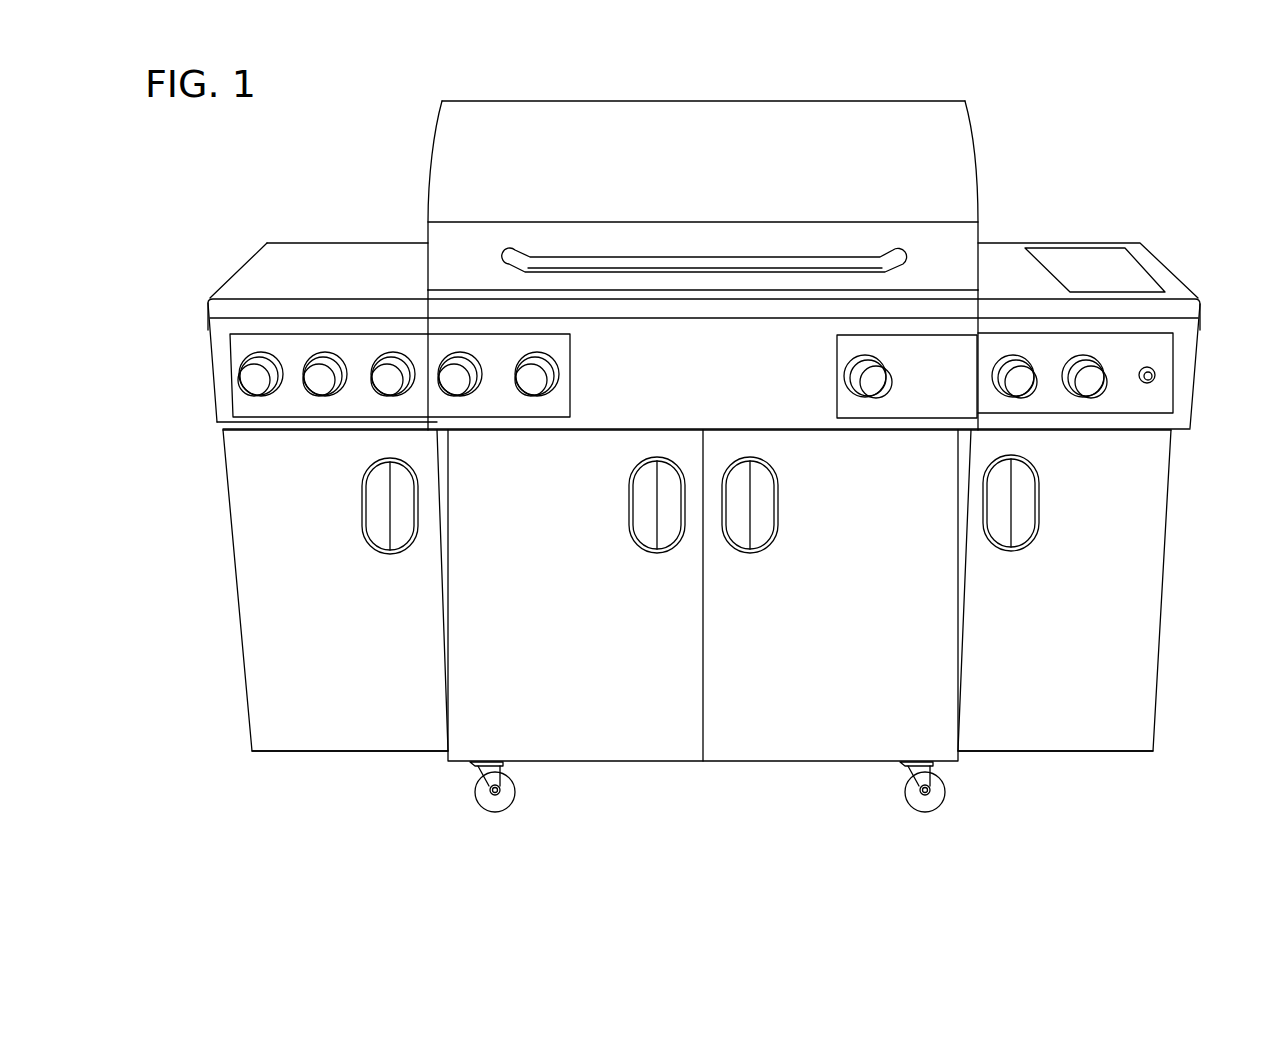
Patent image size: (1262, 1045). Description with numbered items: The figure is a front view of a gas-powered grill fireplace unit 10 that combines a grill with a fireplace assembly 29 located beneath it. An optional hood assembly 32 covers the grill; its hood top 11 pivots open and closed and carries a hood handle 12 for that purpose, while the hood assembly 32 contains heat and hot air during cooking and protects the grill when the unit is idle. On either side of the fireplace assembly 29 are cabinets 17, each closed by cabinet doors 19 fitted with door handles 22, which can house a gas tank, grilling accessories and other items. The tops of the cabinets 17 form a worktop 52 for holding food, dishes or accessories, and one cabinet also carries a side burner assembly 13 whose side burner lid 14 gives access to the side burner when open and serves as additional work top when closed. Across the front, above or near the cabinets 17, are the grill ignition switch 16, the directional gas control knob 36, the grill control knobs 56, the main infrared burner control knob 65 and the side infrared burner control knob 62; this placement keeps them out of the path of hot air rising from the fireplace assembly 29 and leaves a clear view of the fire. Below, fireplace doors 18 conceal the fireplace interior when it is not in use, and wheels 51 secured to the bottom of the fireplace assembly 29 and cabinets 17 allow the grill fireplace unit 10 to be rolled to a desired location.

The grill fireplace unit 10 is at (376, 130).
The hood top 11 is at (955, 135).
The hood handle 12 is at (865, 262).
The side burner assembly 13 is at (1100, 255).
The side burner lid 14 is at (1128, 277).
The grill ignition switch 16 is at (1156, 376).
The cabinets 17 is at (257, 668).
The fireplace doors 18 is at (586, 723).
The cabinet doors 19 is at (285, 560).
The door handles 22 is at (372, 513).
The fireplace assembly 29 is at (480, 678).
The hood assembly 32 is at (752, 101).
The directional gas control knob 36 is at (878, 392).
The wheels 51 is at (498, 810).
The worktop 52 is at (325, 260).
The grill control knob 56 is at (531, 384).
The side infrared burner control knob 62 is at (1092, 378).
The main infrared burner control knob 65 is at (1014, 362).